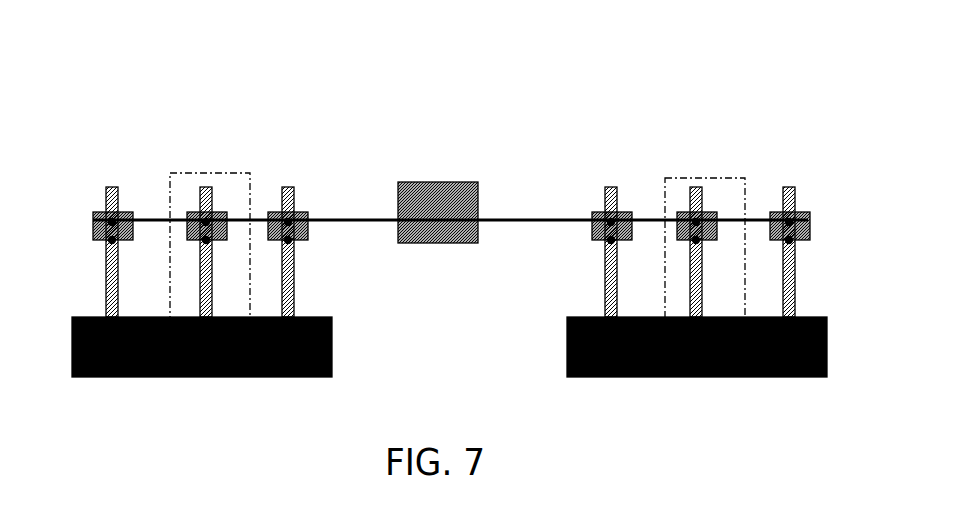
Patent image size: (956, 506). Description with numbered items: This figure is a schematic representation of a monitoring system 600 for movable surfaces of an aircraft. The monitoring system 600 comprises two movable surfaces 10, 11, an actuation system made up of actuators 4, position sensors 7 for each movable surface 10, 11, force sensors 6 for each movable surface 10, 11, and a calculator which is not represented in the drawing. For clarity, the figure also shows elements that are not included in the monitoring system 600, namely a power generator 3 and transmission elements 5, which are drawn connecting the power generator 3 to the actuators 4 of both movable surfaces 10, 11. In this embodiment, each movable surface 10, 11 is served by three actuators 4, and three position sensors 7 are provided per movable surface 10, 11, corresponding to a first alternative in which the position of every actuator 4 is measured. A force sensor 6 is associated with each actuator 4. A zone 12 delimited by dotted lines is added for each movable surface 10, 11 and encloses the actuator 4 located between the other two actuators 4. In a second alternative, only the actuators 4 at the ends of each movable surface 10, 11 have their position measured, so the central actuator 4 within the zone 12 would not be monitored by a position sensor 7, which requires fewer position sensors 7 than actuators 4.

The monitoring system 600 is at (330, 108).
The power generator 3 is at (438, 182).
The actuator 4 is at (112, 240).
The transmission element 5 is at (367, 220).
The force sensor 6 is at (114, 221).
The position sensor 7 is at (112, 198).
The movable surface 10 is at (332, 345).
The movable surface 11 is at (567, 345).
The zone 12 is at (170, 293).